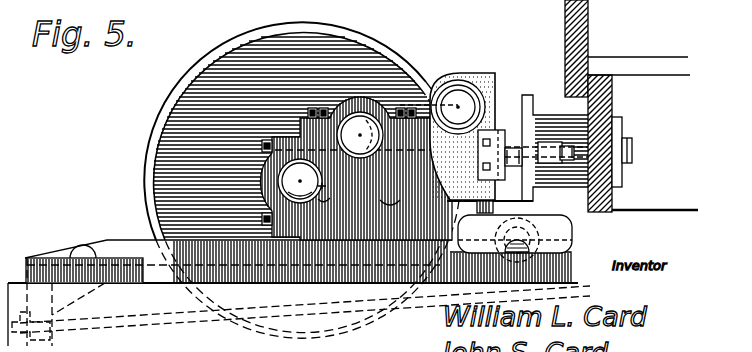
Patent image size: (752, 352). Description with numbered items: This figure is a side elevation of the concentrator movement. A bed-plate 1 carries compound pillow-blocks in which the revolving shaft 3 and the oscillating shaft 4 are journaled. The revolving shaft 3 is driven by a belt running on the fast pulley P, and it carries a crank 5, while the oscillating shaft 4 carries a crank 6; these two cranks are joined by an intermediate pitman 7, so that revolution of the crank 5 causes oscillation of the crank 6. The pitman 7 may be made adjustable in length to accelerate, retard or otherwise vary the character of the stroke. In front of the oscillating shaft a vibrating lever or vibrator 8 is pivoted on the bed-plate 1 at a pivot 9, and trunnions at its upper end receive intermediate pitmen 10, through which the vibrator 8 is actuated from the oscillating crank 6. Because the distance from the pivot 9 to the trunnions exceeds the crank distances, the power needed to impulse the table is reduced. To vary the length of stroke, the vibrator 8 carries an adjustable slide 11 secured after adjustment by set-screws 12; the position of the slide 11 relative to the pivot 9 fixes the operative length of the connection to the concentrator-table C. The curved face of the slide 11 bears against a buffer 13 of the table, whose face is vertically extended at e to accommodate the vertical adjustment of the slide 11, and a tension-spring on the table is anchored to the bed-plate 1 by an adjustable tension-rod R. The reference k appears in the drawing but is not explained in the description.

The grinding wheel P is at (171, 104).
The base 1 is at (299, 281).
The ball bearing 3 is at (292, 186).
The bracket 4 is at (362, 122).
The bearing cup 5 is at (330, 197).
The ball 6 is at (357, 113).
The pin 7 is at (325, 187).
The block 8 is at (478, 82).
The bearing housing 9 is at (528, 238).
The ball 10 is at (400, 97).
The bolt 11 is at (548, 150).
The screws 12 is at (482, 166).
The hub 13 is at (536, 127).
The bracket arm k is at (385, 216).
The plate e is at (539, 141).
The direction of rotation R is at (301, 301).
The frame C is at (629, 137).